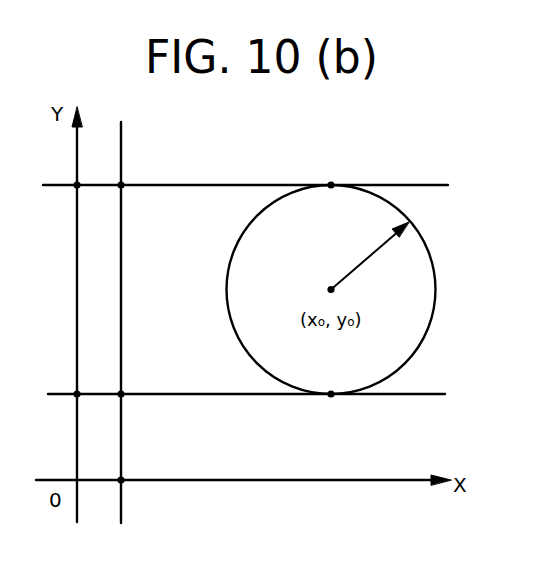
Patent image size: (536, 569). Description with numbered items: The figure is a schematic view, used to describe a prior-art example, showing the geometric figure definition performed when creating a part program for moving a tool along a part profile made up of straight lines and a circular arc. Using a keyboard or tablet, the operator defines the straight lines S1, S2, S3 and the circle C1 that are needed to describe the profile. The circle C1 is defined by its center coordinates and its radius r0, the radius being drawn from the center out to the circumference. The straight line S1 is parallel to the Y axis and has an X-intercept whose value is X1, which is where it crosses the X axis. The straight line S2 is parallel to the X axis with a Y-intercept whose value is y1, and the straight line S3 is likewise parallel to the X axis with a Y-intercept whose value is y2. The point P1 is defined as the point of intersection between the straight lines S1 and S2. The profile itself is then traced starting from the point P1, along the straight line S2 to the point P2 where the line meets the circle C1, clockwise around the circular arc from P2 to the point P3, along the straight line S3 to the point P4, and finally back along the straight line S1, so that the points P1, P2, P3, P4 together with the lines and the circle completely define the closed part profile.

The straight line S1 is at (121, 437).
The straight line S2 is at (257, 395).
The straight line S3 is at (216, 185).
The circle C1 is at (436, 300).
The radius r0 is at (368, 257).
The point of intersection P1 is at (133, 382).
The point P2 is at (338, 408).
The point P3 is at (333, 174).
The point P4 is at (133, 175).
The X-intercept X1 is at (121, 481).
The Y-intercept y1 is at (77, 394).
The Y-intercept y2 is at (77, 185).